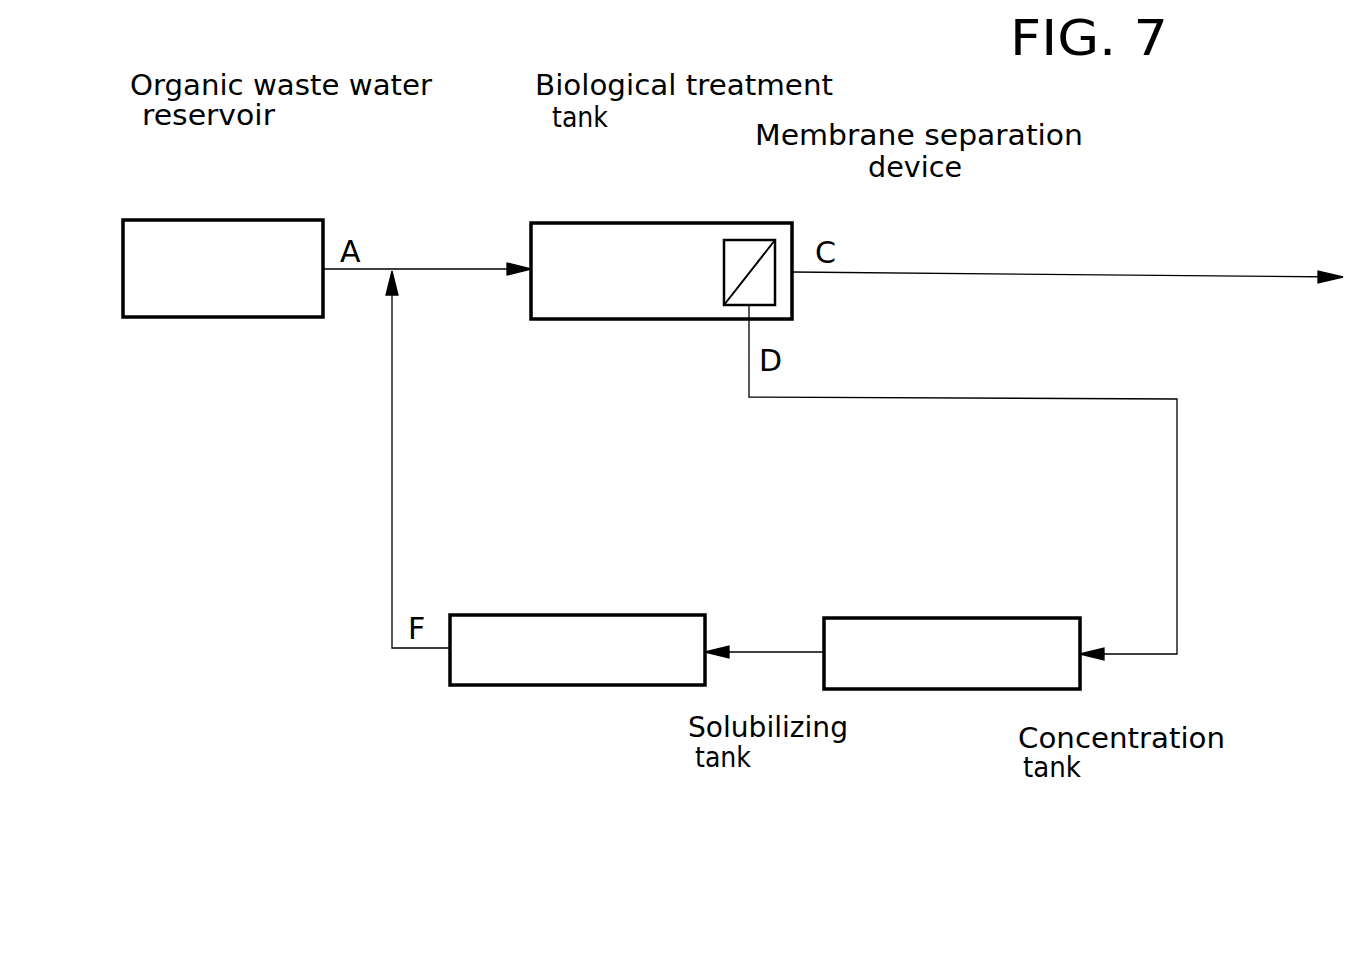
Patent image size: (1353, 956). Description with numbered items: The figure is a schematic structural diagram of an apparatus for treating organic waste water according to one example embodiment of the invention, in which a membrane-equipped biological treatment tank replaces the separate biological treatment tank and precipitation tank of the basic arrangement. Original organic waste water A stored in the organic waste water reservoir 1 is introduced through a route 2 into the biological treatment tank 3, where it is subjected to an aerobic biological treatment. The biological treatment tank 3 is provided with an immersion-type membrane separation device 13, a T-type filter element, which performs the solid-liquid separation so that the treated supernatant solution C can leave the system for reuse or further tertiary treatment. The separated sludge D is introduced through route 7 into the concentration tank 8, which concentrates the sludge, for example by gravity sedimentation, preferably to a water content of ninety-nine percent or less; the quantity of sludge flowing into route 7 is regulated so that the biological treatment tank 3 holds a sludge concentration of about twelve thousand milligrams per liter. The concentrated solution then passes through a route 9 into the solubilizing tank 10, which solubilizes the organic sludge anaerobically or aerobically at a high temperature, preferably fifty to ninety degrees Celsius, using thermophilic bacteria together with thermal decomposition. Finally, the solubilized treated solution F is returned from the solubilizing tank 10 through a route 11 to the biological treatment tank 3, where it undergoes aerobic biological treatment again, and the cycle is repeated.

The organic waste water reservoir 1 is at (239, 228).
The route 2 is at (432, 268).
The biological treatment tank 3 is at (629, 222).
The immersion-type membrane separation device 13 is at (758, 240).
The route 7 is at (1180, 541).
The concentration tank 8 is at (972, 690).
The route 9 is at (778, 650).
The solubilizing tank 10 is at (640, 688).
The route 11 is at (392, 464).